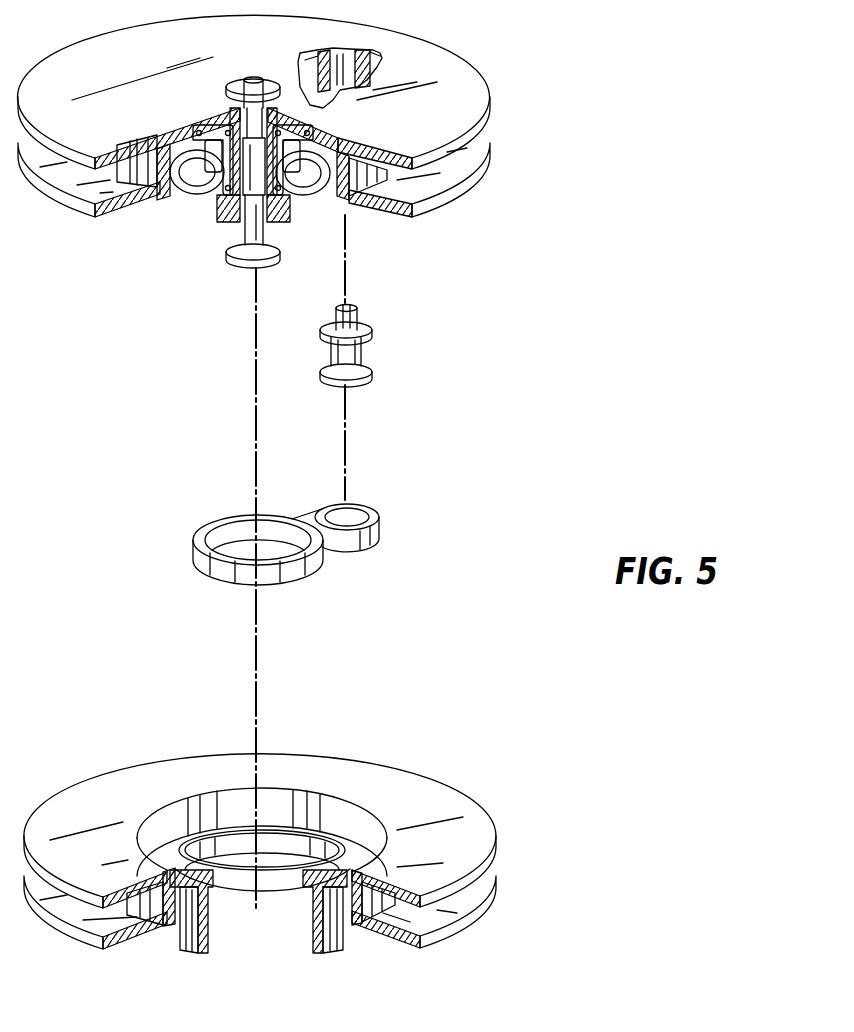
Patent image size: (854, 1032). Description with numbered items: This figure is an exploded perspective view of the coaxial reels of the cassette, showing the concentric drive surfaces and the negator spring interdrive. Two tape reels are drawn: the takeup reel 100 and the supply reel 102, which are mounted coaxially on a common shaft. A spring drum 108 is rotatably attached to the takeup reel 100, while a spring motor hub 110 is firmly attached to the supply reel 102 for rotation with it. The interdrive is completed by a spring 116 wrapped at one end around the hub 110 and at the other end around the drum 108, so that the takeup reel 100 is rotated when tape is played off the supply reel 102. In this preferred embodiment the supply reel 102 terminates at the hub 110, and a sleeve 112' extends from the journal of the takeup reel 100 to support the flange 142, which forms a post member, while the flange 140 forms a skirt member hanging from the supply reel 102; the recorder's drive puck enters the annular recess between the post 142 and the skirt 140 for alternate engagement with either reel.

The takeup reel 100 is at (445, 60).
The supply reel 102 is at (200, 765).
The spring drum 108 is at (370, 335).
The spring motor hub 110 is at (315, 199).
The sleeve 112' is at (196, 196).
The spring 116 is at (358, 535).
The flange 140 is at (187, 937).
The flange 142 is at (278, 190).